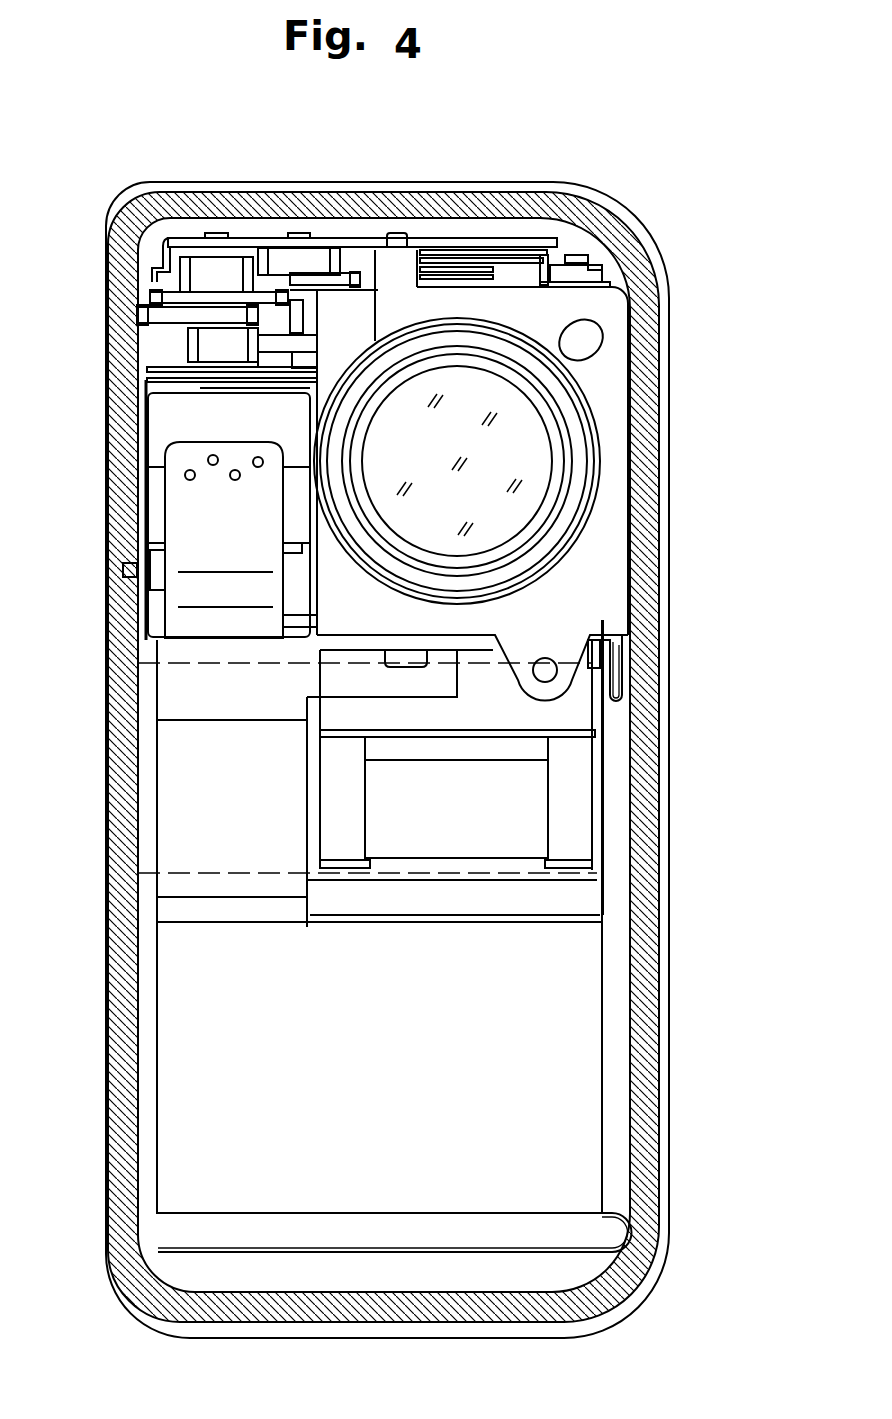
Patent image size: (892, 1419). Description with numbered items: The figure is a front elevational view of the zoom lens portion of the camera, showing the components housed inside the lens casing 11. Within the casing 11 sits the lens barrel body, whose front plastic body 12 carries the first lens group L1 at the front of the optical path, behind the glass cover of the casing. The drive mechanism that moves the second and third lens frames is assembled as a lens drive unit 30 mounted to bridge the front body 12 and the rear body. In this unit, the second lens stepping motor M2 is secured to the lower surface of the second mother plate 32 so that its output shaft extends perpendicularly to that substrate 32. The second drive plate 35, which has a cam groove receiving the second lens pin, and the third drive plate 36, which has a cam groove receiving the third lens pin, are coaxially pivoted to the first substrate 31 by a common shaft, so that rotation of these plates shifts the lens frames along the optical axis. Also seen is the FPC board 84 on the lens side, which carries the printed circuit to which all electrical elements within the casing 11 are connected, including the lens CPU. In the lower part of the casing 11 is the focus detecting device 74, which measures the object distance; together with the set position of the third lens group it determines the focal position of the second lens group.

The lens casing 11 is at (650, 935).
The front plastic body 12 is at (606, 383).
The lens drive unit 30 is at (166, 232).
The first substrate 31 is at (247, 242).
The second mother plate (substrate) 32 is at (155, 378).
The second drive plate 35 is at (512, 253).
The third drive plate 36 is at (562, 267).
The focus detecting device 74 is at (470, 843).
The FPC board on the lens side 84 is at (317, 562).
The first lens group L1 is at (517, 509).
The second lens stepping motor M2 is at (180, 420).